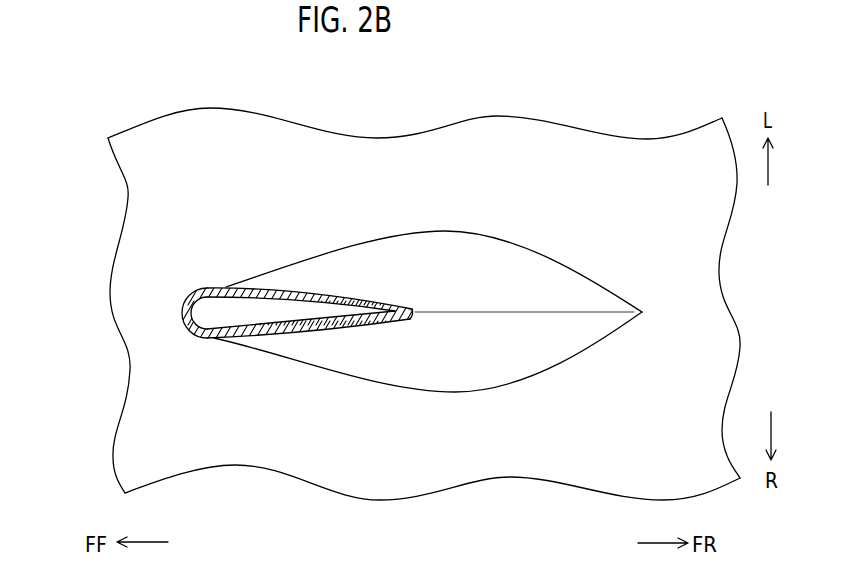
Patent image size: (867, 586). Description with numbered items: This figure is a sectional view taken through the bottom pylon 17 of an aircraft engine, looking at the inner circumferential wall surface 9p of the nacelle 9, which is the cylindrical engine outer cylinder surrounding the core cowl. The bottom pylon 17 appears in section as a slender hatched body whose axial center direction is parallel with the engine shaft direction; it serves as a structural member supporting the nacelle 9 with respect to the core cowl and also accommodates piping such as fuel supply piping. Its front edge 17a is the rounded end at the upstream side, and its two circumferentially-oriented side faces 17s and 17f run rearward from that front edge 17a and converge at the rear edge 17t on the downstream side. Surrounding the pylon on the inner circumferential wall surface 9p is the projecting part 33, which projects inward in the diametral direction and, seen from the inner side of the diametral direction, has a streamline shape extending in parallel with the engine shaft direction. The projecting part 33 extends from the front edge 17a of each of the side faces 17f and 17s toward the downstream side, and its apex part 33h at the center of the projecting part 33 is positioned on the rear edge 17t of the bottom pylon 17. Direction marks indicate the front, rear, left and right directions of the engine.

The nacelle 9 is at (582, 408).
The inner circumferential wall surface 9p is at (497, 127).
The projecting part 33 is at (500, 252).
The apex part 33h is at (412, 306).
The bottom pylon 17 is at (287, 314).
The front edge 17a is at (183, 312).
The side face 17s is at (310, 294).
The side face 17f is at (288, 336).
The rear edge 17t is at (413, 317).